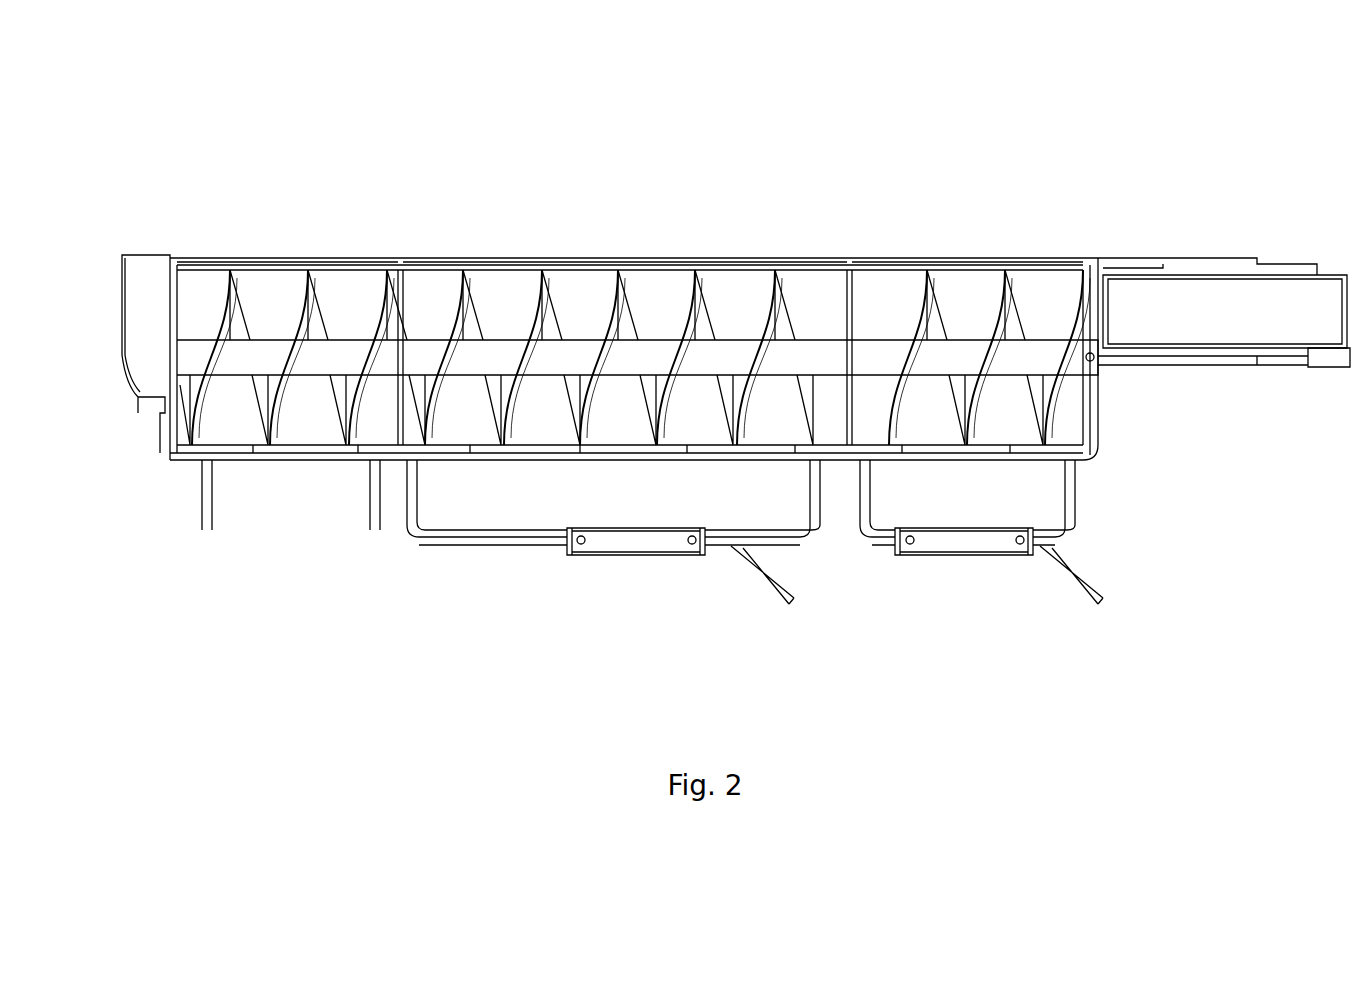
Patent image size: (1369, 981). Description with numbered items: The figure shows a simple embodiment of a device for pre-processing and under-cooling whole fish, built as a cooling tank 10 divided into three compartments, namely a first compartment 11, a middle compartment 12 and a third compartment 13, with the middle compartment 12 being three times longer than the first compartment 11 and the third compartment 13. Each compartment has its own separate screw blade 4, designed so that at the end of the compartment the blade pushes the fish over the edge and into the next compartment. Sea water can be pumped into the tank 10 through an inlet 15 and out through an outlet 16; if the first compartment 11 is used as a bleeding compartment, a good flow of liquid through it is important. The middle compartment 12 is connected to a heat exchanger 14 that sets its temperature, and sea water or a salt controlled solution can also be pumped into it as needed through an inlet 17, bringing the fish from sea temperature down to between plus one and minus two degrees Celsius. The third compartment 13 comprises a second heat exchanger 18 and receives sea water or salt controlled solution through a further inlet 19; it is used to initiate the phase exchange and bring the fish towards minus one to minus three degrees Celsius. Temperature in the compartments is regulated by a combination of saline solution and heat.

The screw blade 4 is at (331, 290).
The tank 10 is at (192, 259).
The first compartment 11 is at (290, 330).
The middle compartment 12 is at (627, 330).
The third compartment 13 is at (967, 237).
The heat exchanger 14 is at (644, 566).
The inlet 15 is at (203, 543).
The outlet 16 is at (380, 536).
The inlet 17 is at (768, 605).
The second heat exchanger 18 is at (968, 564).
The inlet 19 is at (1094, 579).